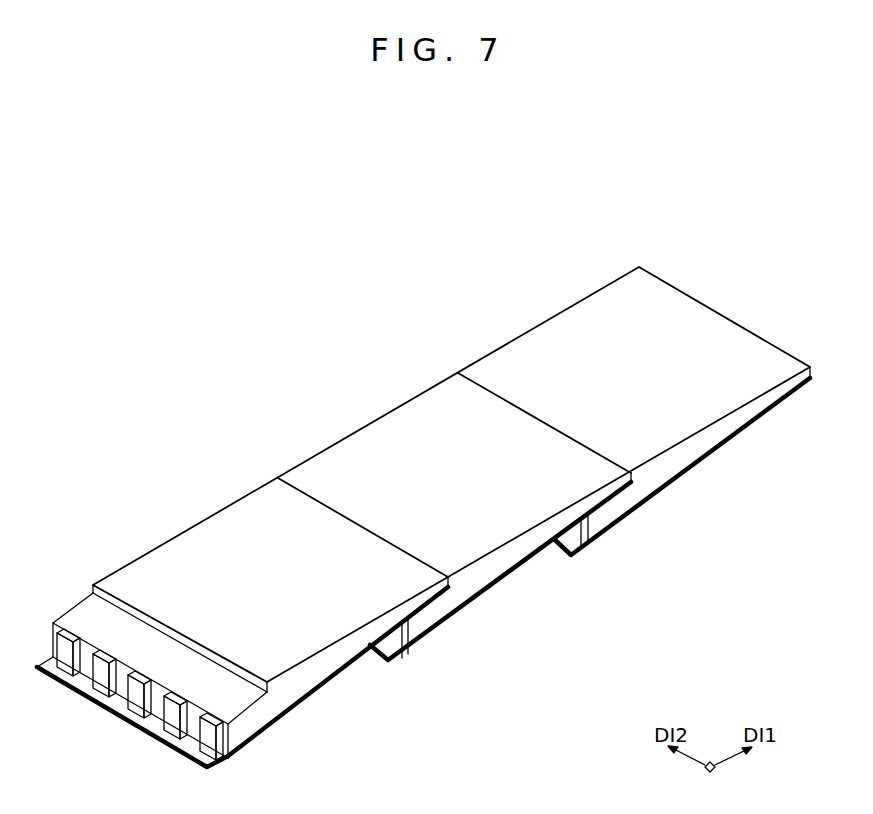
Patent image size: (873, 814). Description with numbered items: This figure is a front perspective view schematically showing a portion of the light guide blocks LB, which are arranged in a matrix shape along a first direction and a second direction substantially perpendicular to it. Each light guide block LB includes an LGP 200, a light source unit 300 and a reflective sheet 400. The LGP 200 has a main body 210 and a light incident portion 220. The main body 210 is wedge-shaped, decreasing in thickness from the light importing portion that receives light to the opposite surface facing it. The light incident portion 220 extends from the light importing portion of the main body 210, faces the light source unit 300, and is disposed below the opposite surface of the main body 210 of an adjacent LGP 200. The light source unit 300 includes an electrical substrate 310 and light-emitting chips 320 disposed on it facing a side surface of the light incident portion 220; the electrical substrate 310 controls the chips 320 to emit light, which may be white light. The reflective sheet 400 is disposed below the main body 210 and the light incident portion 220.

The electrical substrate 310 is at (397, 657).
The light-emitting chip 320 is at (410, 654).
The light source unit 300 is at (338, 671).
The main body 210 is at (470, 588).
The light incident portion 220 is at (433, 622).
The LGP 200 is at (590, 561).
The reflective sheet 400 is at (503, 579).
The light guide block LB is at (558, 743).